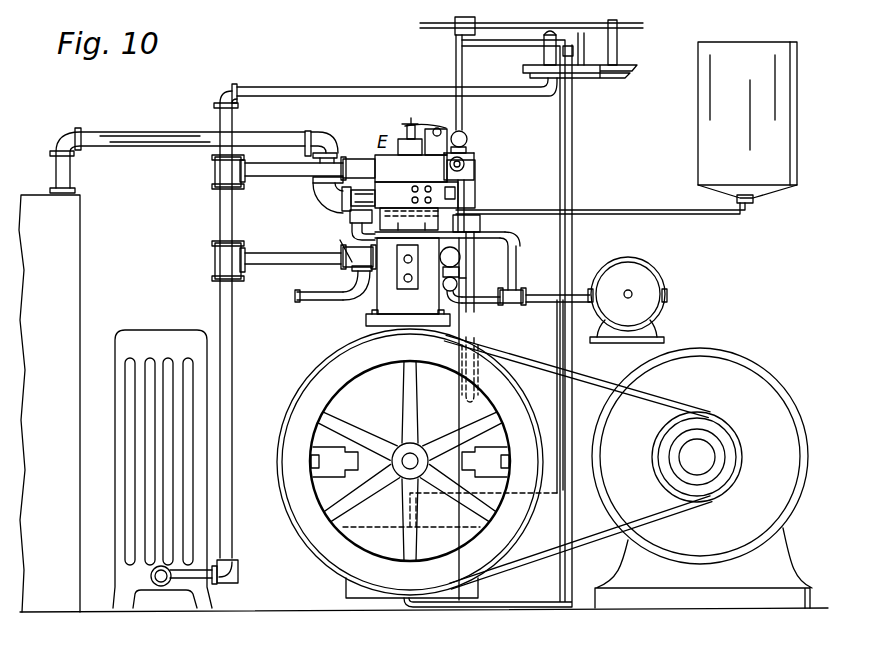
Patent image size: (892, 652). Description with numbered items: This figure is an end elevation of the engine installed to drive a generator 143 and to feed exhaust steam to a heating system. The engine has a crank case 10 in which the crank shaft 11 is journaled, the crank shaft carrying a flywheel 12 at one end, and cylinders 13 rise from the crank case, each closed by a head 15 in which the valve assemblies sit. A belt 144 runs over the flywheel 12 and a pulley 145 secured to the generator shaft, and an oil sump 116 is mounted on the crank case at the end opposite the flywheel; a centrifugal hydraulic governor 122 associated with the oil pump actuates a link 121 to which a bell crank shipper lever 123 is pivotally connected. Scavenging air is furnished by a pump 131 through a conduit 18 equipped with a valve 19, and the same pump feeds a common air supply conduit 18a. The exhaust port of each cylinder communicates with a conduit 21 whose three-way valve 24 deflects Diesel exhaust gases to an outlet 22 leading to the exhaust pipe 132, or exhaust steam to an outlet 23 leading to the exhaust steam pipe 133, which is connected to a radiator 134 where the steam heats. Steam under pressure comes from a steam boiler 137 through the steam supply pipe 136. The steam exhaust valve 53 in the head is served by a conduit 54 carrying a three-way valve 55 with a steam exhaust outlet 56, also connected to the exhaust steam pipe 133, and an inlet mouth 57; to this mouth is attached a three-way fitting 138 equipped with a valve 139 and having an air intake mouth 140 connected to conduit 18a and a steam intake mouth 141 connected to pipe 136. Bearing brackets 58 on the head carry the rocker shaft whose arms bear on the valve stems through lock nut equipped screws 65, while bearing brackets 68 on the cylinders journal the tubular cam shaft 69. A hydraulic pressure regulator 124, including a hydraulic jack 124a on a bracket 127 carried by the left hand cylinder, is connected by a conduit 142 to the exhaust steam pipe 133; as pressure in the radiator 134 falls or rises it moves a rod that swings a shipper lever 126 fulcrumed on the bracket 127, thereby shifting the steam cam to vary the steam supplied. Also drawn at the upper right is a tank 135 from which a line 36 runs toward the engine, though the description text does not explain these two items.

The crank case 10 is at (372, 398).
The crank shaft 11 is at (404, 460).
The flywheel 12 is at (506, 530).
The cylinder 13 is at (381, 296).
The head 15 is at (436, 178).
The conduit 18 is at (503, 305).
The air supply conduit 18a is at (517, 259).
The valve 19 is at (475, 281).
The conduit 21 is at (357, 258).
The outlet 22 is at (345, 272).
The outlet 23 is at (340, 253).
The three-way valve 24 is at (338, 248).
The fuel pipe 36 is at (657, 210).
The steam exhaust valve 53 is at (402, 125).
The conduit 54 is at (360, 160).
The three-way valve 55 is at (364, 160).
The steam exhaust outlet 56 is at (350, 165).
The inlet mouth 57 is at (370, 170).
The bearing brackets 58 is at (414, 182).
The lock nut equipped screw 65 is at (410, 121).
The bearing brackets 68 is at (475, 168).
The cam shaft 69 is at (433, 129).
The oil sump 116 is at (352, 590).
The link 121 is at (458, 207).
The centrifugal hydraulic governor 122 is at (481, 228).
The bell crank shipper lever 123 is at (466, 190).
The hydraulic pressure regulator 124 is at (640, 45).
The hydraulic jack 124a is at (467, 137).
The shipper lever 126 is at (474, 158).
The bracket 127 is at (470, 148).
The pump 131 is at (633, 277).
The exhaust pipe 132 is at (311, 304).
The exhaust steam pipe 133 is at (229, 323).
The radiator 134 is at (168, 340).
The fuel tank 135 is at (713, 115).
The steam supply pipe 136 is at (163, 132).
The steam boiler 137 is at (56, 245).
The three-way fitting 138 is at (360, 206).
The valve 139 is at (371, 190).
The air intake mouth 140 is at (345, 202).
The steam intake mouth 141 is at (318, 196).
The conduit 142 is at (345, 89).
The generator 143 is at (706, 370).
The belt 144 is at (557, 560).
The pulley 145 is at (668, 446).